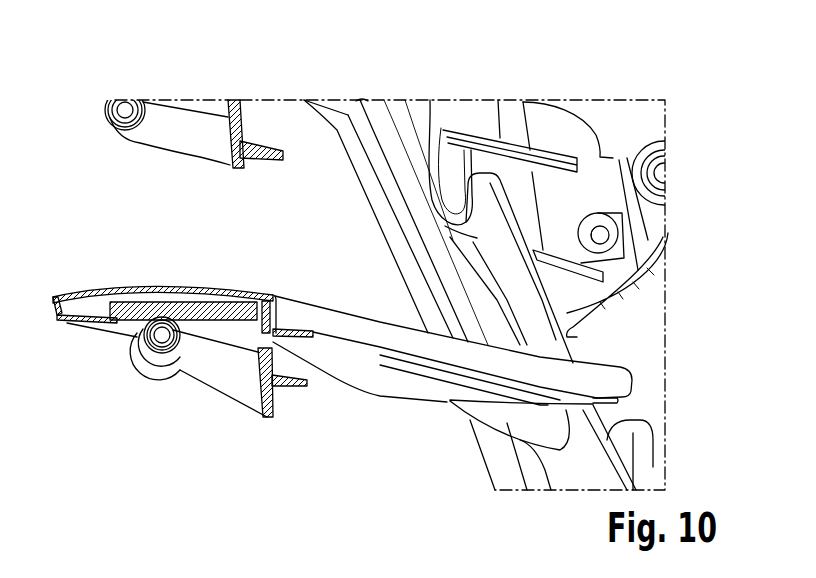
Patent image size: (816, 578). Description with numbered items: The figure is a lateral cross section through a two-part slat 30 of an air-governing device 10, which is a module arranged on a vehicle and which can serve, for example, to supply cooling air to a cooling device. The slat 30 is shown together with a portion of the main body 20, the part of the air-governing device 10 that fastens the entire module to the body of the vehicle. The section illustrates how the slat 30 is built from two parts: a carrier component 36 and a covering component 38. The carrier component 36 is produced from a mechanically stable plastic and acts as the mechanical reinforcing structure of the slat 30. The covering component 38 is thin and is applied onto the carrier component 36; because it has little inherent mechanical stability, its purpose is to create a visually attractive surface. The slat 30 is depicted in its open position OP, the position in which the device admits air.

The air-governing device 10 is at (629, 68).
The main body 20 is at (648, 242).
The slat 30 is at (138, 274).
The carrier component 36 is at (364, 387).
The covering component 38 is at (309, 311).
The open position OP is at (148, 405).